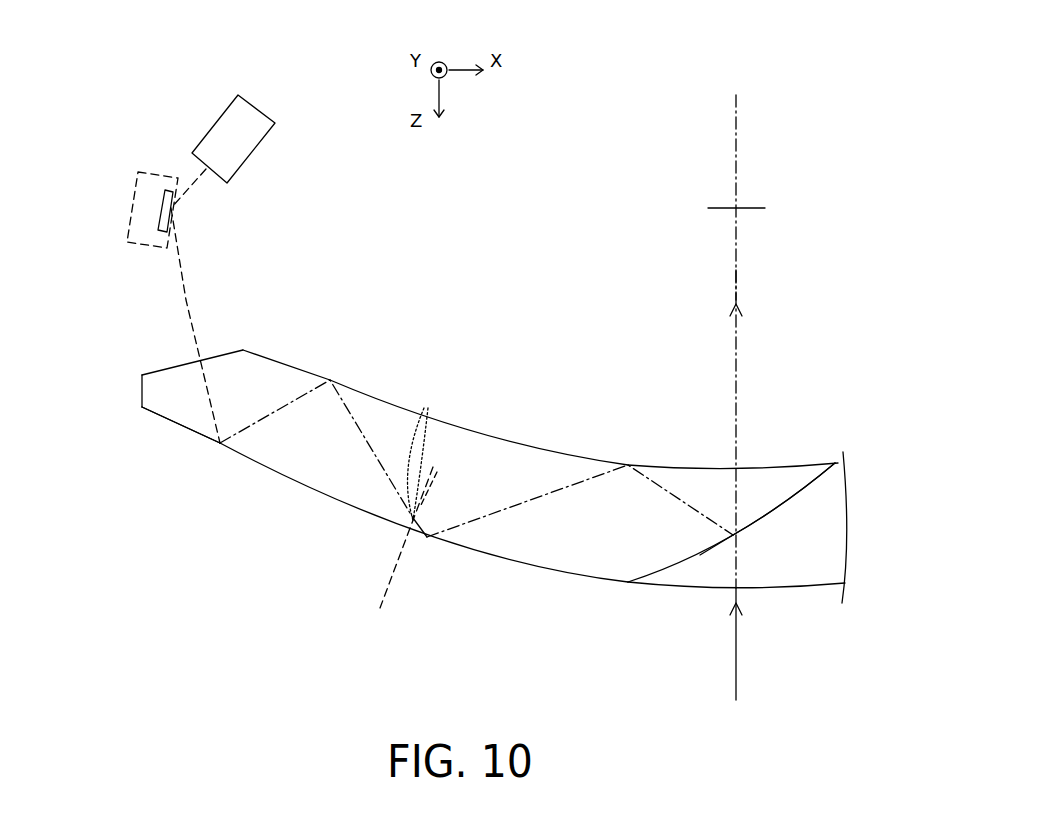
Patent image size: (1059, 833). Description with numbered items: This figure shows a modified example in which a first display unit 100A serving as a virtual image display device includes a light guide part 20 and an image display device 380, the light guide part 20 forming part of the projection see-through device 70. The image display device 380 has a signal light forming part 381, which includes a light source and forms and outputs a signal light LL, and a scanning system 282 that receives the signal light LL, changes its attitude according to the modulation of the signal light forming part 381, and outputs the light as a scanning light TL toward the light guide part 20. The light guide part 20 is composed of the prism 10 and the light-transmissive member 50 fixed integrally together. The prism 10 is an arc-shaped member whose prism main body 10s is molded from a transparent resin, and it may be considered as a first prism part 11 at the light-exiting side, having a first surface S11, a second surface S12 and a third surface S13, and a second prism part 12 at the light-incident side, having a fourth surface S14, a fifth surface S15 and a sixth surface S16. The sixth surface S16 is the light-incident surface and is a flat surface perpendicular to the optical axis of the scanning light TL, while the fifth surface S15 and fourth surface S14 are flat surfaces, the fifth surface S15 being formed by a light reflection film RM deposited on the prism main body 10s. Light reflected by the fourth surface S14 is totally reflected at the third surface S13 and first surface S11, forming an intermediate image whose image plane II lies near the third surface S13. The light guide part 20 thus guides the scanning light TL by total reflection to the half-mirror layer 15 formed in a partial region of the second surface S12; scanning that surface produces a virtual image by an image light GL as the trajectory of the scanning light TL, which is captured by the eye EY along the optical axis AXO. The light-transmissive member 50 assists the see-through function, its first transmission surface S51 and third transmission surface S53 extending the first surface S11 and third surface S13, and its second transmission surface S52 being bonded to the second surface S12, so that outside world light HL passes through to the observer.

The first display unit 100A is at (808, 98).
The projection see-through device 70 is at (505, 230).
The image display device 380 is at (177, 137).
The signal light forming part 381 is at (243, 150).
The scanning system 282 is at (137, 200).
The signal light LL is at (190, 190).
The scanning light TL is at (187, 295).
The light guide part 20 is at (308, 565).
The prism 10 is at (423, 352).
The prism main body 10s is at (458, 433).
The first prism part 11 is at (588, 568).
The second prism part 12 is at (292, 468).
The half-mirror layer 15 is at (720, 547).
The first surface S11 is at (633, 463).
The second surface S12 is at (670, 568).
The third surface S13 is at (453, 552).
The fourth surface S14 is at (323, 378).
The fifth surface S15 is at (207, 440).
The sixth surface S16 is at (158, 368).
The light reflection film RM is at (177, 423).
The image plane of the intermediate image II is at (422, 452).
The light-transmissive member 50 is at (817, 570).
The first transmission surface S51 is at (833, 462).
The second transmission surface S52 is at (782, 503).
The third transmission surface S53 is at (770, 590).
The optical axis AXO is at (738, 160).
The eye EY is at (722, 208).
The image light GL is at (737, 287).
The outside world light HL is at (735, 670).